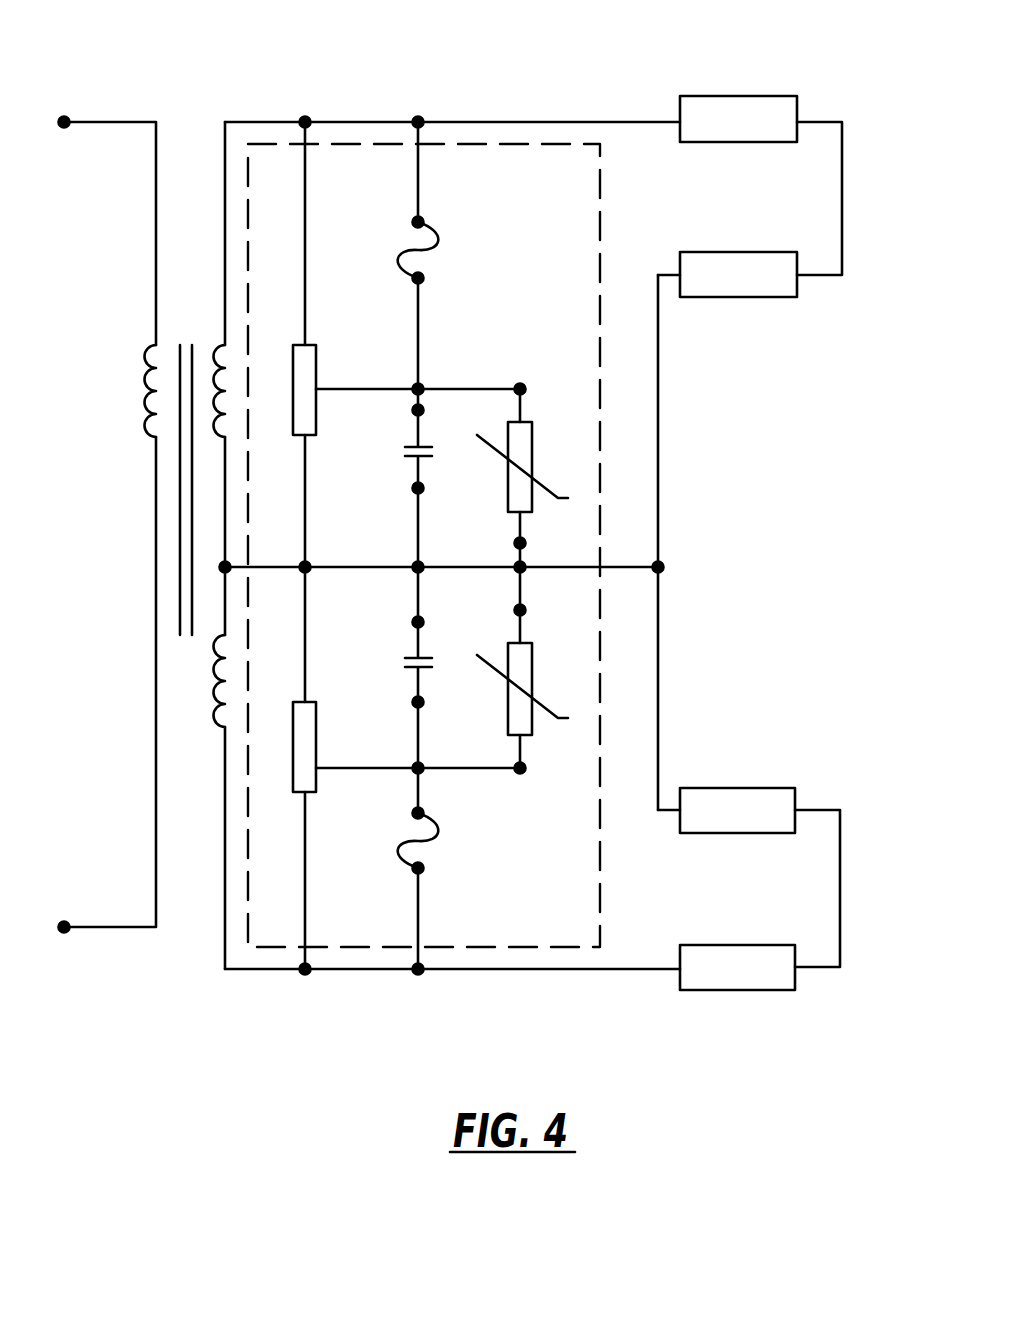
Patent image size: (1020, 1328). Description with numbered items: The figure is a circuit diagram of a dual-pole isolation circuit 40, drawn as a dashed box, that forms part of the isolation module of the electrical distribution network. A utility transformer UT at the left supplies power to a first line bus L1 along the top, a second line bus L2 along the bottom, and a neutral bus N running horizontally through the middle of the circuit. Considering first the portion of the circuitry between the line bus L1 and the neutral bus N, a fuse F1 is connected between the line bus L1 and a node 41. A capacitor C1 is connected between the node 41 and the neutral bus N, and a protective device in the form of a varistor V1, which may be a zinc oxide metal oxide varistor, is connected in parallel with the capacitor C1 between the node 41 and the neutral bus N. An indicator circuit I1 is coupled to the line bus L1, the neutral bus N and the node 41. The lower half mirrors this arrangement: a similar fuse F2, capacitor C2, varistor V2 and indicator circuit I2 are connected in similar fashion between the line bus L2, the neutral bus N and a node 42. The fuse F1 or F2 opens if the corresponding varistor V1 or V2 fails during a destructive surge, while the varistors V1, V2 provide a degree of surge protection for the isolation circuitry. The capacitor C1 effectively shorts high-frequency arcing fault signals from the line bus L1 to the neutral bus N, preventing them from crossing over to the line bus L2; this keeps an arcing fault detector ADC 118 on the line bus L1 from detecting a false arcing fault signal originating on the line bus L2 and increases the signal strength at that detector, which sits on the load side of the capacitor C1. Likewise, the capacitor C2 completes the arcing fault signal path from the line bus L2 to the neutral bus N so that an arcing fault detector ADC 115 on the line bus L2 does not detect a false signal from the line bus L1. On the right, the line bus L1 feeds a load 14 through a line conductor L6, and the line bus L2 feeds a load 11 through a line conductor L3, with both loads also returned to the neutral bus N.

The arcing fault detector ADC 118 is at (712, 96).
The load 14 is at (710, 297).
The load 11 is at (712, 788).
The arcing fault detector ADC 115 is at (708, 990).
The dual-pole isolation circuit 40 is at (622, 880).
The node 41 is at (418, 389).
The node 42 is at (418, 768).
The first line bus L1 is at (344, 122).
The second line bus L2 is at (352, 971).
The line conductor L3 is at (840, 890).
The line conductor L6 is at (842, 195).
The neutral bus N is at (318, 567).
The utility transformer UT is at (142, 510).
The indicator circuit I1 is at (317, 353).
The indicator circuit I2 is at (318, 778).
The fuse F1 is at (435, 250).
The fuse F2 is at (434, 841).
The capacitor C1 is at (402, 449).
The capacitor C2 is at (402, 662).
The varistor V1 is at (526, 478).
The varistor V2 is at (526, 667).